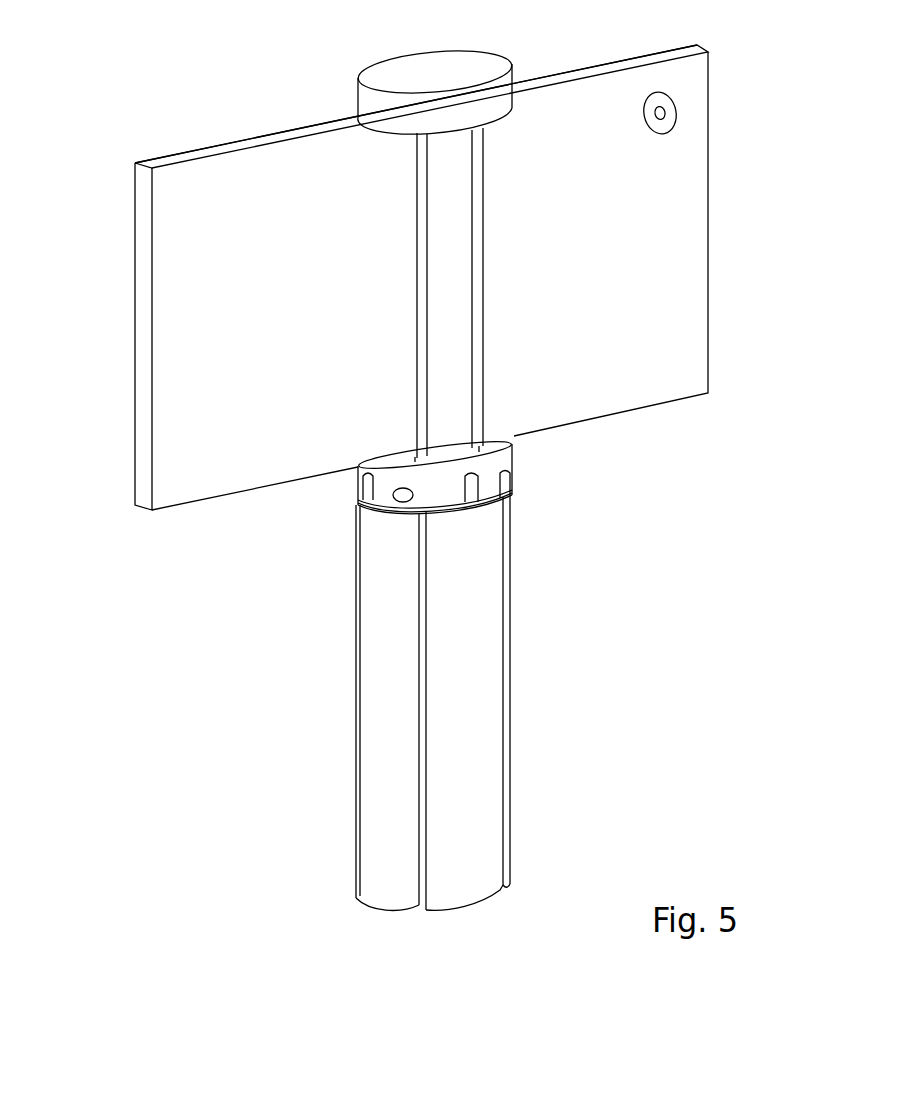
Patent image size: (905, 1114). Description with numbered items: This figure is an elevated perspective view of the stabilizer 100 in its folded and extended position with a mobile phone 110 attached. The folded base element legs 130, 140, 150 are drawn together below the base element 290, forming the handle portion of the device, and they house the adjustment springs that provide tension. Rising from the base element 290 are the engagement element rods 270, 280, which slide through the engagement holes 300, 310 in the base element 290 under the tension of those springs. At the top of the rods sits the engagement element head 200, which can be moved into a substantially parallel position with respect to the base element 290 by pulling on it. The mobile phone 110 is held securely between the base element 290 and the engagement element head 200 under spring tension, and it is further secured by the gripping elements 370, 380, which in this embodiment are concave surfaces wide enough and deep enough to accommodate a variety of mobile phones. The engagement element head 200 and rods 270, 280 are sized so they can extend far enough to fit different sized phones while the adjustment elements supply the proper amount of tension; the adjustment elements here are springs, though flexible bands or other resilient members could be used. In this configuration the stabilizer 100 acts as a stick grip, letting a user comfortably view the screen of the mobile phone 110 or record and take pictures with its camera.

The stabilizer 100 is at (447, 459).
The mobile phone 110 is at (680, 205).
The base element leg 130 is at (398, 705).
The base element leg 140 is at (472, 765).
The base element leg 150 is at (510, 667).
The engagement element head 200 is at (455, 72).
The engagement element rod 270 is at (423, 412).
The engagement element rod 280 is at (481, 385).
The base element 290 is at (510, 458).
The engagement hole 300 is at (490, 440).
The engagement hole 310 is at (417, 455).
The gripping element 370 is at (377, 125).
The gripping element 380 is at (482, 443).